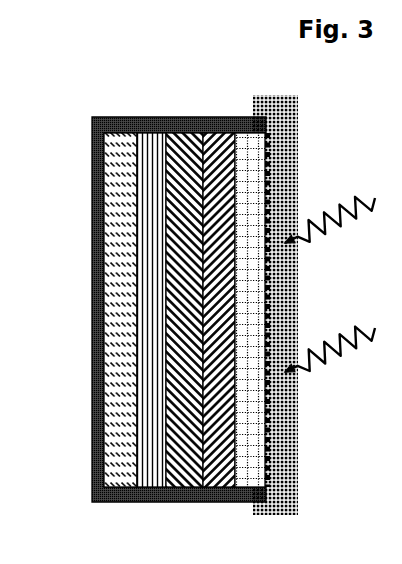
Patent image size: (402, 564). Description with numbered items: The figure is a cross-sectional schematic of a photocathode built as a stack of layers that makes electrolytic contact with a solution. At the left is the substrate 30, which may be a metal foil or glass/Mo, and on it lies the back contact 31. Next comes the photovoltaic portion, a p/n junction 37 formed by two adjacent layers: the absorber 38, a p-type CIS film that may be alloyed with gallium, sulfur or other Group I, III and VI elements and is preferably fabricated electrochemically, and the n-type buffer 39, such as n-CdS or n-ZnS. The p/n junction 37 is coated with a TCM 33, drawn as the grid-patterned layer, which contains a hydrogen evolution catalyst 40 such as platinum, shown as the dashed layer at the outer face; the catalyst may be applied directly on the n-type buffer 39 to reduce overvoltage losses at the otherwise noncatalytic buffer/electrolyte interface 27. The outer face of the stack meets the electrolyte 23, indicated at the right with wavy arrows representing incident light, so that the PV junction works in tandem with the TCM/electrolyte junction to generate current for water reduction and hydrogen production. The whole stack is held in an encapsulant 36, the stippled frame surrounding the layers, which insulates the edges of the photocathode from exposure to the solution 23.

The electrolyte 23 is at (292, 165).
The buffer/electrolyte interface 27 is at (245, 128).
The substrate 30 is at (118, 417).
The back contact 31 is at (152, 467).
The TCM 33 is at (255, 475).
The encapsulant 36 is at (97, 192).
The p/n junction 37 is at (212, 312).
The absorber 38 is at (178, 470).
The n-type buffer 39 is at (215, 467).
The hydrogen evolution catalyst 40 is at (268, 440).